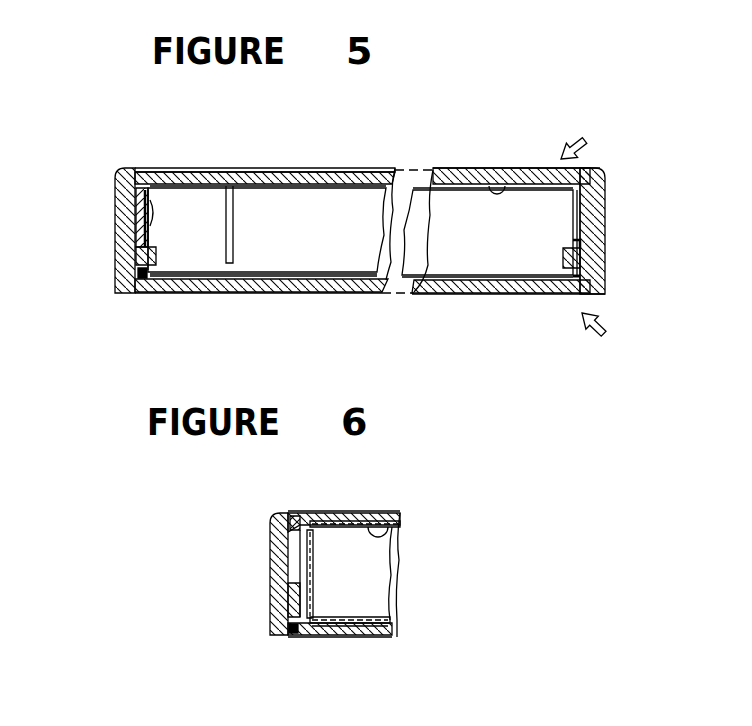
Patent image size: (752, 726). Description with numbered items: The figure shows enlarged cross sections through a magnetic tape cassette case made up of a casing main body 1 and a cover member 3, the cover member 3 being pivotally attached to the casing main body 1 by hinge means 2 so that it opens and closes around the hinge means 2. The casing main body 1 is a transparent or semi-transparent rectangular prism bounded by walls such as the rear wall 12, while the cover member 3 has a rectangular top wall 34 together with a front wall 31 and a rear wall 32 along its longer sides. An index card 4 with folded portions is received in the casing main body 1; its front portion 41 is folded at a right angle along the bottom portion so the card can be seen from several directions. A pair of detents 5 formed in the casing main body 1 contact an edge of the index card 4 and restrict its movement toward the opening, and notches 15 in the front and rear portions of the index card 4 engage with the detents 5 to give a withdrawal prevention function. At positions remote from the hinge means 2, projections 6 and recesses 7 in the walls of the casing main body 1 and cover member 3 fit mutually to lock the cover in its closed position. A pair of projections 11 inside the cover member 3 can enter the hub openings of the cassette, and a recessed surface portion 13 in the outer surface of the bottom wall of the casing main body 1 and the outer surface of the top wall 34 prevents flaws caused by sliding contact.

In FIG. 5, the casing main body 1 is at (606, 337).
In FIG. 5, the hinge means 2 is at (138, 278).
In FIG. 5, the cover member 3 is at (586, 135).
In FIG. 5, the index card 4 is at (319, 270).
In FIG. 6, the index card 4 is at (370, 617).
In FIG. 5, the detents 5 is at (156, 257).
In FIG. 6, the projections 6 is at (290, 603).
In FIG. 6, the recesses 7 is at (290, 636).
In FIG. 5, the projections 11 is at (132, 202).
In FIG. 6, the projections 11 is at (298, 512).
In FIG. 5, the rear wall 12 is at (575, 215).
In FIG. 5, the recessed surface portion 13 is at (465, 170).
In FIG. 6, the recessed surface portion 13 is at (375, 513).
In FIG. 5, the notches 15 is at (272, 285).
In FIG. 6, the notches 15 is at (343, 628).
In FIG. 5, the front wall 31 is at (125, 237).
In FIG. 6, the front wall 31 is at (270, 550).
In FIG. 5, the rear wall 32 is at (605, 250).
In FIG. 5, the top wall 34 is at (503, 194).
In FIG. 6, the top wall 34 is at (397, 537).
In FIG. 6, the front portion 41 is at (323, 521).